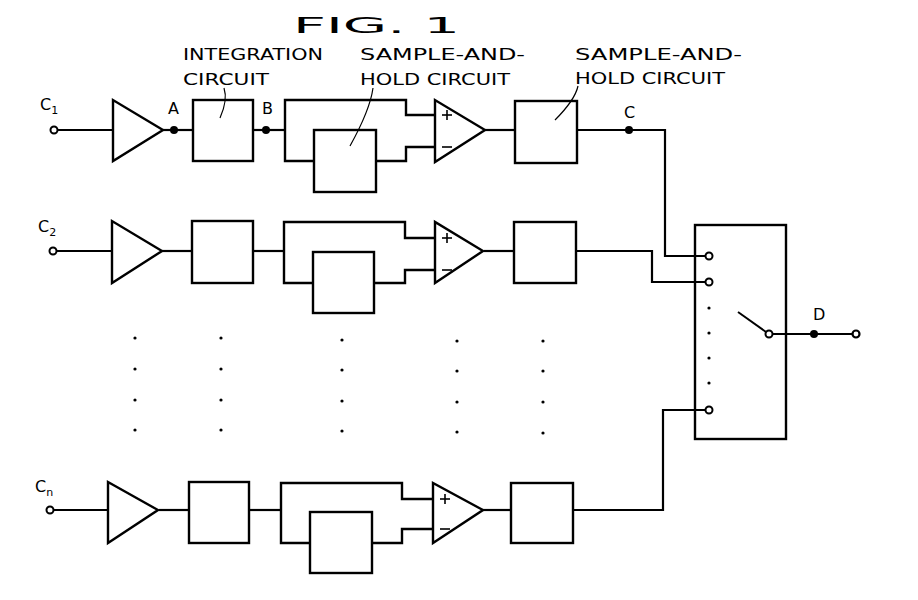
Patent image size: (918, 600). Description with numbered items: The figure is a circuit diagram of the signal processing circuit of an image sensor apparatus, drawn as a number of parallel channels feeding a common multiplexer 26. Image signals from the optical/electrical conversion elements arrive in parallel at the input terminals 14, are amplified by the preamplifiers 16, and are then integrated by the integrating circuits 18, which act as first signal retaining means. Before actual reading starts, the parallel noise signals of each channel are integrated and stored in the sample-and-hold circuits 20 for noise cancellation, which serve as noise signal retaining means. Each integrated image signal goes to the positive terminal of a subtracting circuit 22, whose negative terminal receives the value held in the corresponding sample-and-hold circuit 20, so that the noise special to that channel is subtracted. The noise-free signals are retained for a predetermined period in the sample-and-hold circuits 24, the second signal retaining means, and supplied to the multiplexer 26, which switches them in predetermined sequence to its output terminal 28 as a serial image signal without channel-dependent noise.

The input terminal 14 is at (52, 135).
The preamplifier 16 is at (144, 145).
The integrating circuit 18 is at (226, 161).
The sample-and-hold circuit for noise cancellation 20 is at (376, 178).
The subtracting circuit 22 is at (460, 150).
The sample-and-hold circuit 24 is at (560, 163).
The multiplexer 26 is at (748, 225).
The output terminal 28 is at (857, 330).